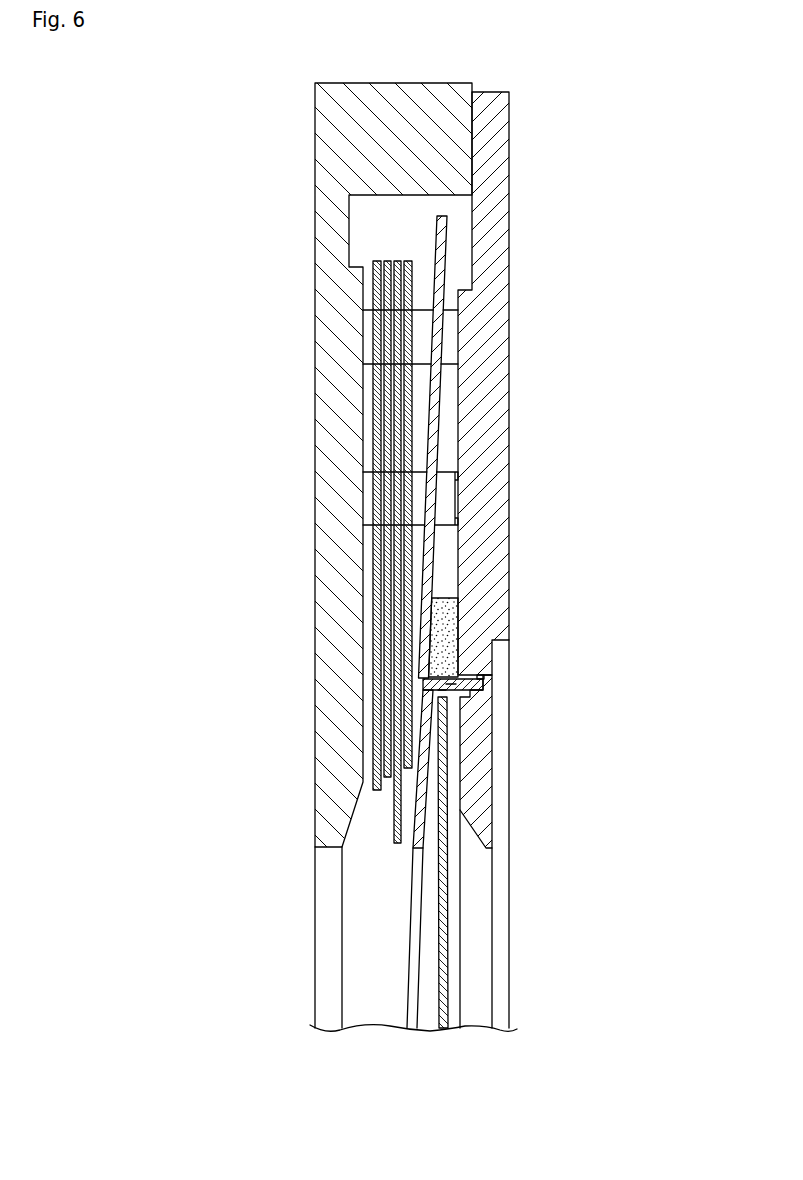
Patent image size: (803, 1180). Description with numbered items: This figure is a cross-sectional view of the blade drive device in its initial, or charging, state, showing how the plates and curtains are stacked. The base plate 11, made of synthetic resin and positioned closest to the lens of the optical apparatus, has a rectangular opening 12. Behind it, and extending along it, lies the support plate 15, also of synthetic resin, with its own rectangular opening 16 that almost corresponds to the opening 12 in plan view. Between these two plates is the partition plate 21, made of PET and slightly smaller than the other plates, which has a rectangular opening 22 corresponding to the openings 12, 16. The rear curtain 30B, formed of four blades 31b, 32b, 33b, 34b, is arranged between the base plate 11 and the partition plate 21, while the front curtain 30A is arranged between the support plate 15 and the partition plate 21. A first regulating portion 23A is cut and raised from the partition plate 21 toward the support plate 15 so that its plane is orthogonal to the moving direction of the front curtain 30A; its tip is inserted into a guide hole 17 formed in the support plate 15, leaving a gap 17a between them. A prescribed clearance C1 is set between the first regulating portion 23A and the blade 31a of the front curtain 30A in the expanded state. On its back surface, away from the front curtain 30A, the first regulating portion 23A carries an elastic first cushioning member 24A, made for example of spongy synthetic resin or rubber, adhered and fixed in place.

The base plate 11 is at (323, 733).
The opening 12 is at (324, 849).
The support plate 15 is at (495, 373).
The opening 16 is at (488, 853).
The guide hole 17 is at (477, 688).
The gap 17a is at (480, 680).
The partition plate 21 is at (430, 553).
The opening 22 is at (413, 849).
The first regulating portion 23A is at (451, 686).
The first cushioning member 24A is at (448, 626).
The clearance C1 is at (442, 691).
The front curtain 30A is at (544, 862).
The blade 31a is at (448, 963).
The rear curtain 30B is at (222, 338).
The blade 31b is at (375, 349).
The blade 32b is at (385, 382).
The blade 33b is at (395, 428).
The blade 34b is at (405, 456).